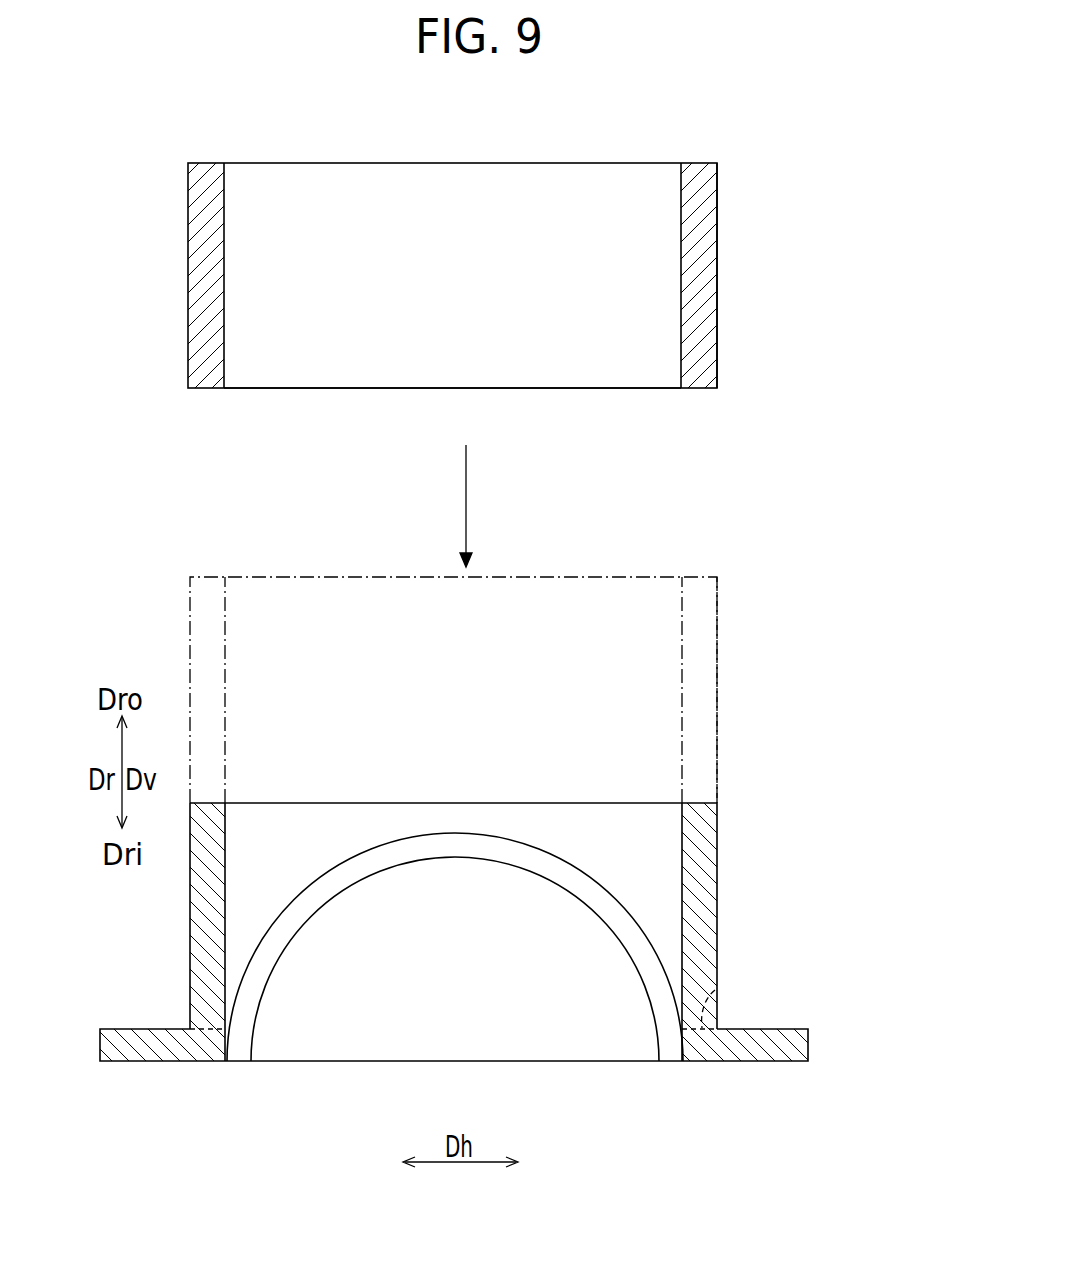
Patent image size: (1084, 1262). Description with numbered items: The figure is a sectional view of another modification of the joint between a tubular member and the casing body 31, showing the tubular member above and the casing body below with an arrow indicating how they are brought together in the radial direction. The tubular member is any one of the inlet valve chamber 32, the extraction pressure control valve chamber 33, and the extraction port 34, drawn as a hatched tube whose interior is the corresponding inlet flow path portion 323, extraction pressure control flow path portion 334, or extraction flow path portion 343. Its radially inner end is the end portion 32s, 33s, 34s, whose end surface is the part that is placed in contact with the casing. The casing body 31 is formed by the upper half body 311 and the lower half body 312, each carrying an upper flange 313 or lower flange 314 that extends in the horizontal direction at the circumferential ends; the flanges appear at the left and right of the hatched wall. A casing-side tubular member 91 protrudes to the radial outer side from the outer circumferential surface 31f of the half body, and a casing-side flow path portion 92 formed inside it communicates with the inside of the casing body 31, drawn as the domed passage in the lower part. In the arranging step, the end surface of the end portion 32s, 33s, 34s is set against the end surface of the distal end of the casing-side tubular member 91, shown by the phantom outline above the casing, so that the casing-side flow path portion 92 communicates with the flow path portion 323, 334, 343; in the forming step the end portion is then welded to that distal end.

The casing body 31 is at (485, 932).
The upper half body 311 is at (485, 932).
The lower half body 312 is at (593, 875).
The upper flange 313 is at (485, 991).
The lower flange 314 is at (127, 1027).
The outer circumferential surface 31f is at (718, 990).
The inlet valve chamber 32 is at (568, 483).
The extraction pressure control valve chamber 33 is at (568, 483).
The extraction port 34 is at (717, 333).
The end portion of the inlet valve chamber 32s is at (832, 483).
The end portion of the extraction pressure control valve chamber 33s is at (832, 483).
The end portion of the extraction port 34s is at (717, 368).
The inlet flow path portion 323 is at (487, 423).
The extraction pressure control flow path portion 334 is at (487, 423).
The extraction flow path portion 343 is at (681, 357).
The casing-side tubular member 91 is at (682, 898).
The casing-side flow path portion 92 is at (682, 890).